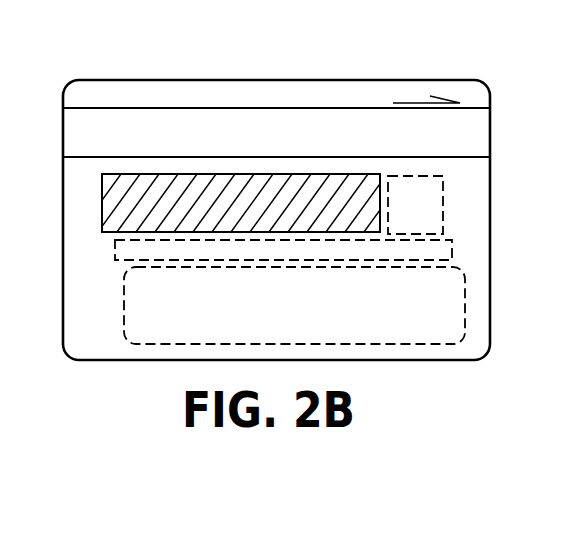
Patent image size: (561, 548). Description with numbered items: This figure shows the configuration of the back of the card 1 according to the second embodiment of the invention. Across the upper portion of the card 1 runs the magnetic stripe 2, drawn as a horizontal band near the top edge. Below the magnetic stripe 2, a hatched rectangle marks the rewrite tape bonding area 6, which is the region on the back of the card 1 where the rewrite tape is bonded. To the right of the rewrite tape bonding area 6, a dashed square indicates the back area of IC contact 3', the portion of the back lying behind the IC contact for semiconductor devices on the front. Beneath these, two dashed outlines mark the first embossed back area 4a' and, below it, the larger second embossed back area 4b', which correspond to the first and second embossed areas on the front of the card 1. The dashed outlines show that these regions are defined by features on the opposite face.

The card 1 is at (258, 80).
The magnetic stripe 2 is at (328, 133).
The rewrite tape bonding area 6 is at (115, 202).
The back area of IC contact 3' is at (460, 205).
The first embossed back area 4a' is at (335, 254).
The second embossed back area 4b' is at (338, 307).